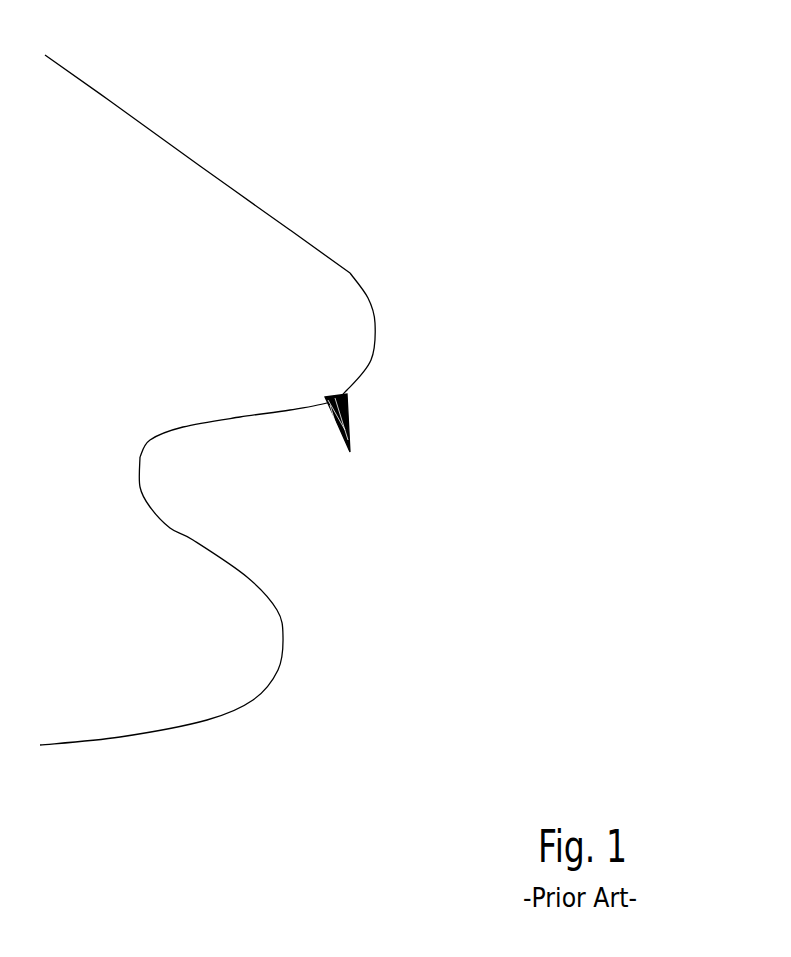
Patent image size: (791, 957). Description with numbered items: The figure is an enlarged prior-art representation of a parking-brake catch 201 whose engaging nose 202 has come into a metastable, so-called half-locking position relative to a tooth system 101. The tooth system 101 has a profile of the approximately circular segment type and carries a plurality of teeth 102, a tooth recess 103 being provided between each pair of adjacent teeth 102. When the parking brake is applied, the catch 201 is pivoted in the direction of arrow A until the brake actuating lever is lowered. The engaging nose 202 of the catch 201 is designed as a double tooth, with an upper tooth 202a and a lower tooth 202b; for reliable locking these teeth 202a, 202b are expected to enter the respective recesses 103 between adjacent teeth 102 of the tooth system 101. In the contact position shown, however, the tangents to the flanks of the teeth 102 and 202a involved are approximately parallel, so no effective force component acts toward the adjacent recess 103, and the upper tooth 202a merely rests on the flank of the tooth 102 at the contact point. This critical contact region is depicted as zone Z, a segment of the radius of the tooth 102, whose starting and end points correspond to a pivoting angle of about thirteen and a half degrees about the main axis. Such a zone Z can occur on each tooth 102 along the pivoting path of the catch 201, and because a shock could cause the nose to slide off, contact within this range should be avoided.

The tooth system 101 is at (552, 418).
The teeth 102 is at (442, 130).
The tooth recess 103 is at (532, 295).
The catch 201 is at (107, 210).
The engaging nose 202 is at (207, 509).
The upper tooth 202a is at (257, 365).
The lower tooth 202b is at (161, 601).
The zone Z is at (281, 443).
The arrow A is at (276, 74).